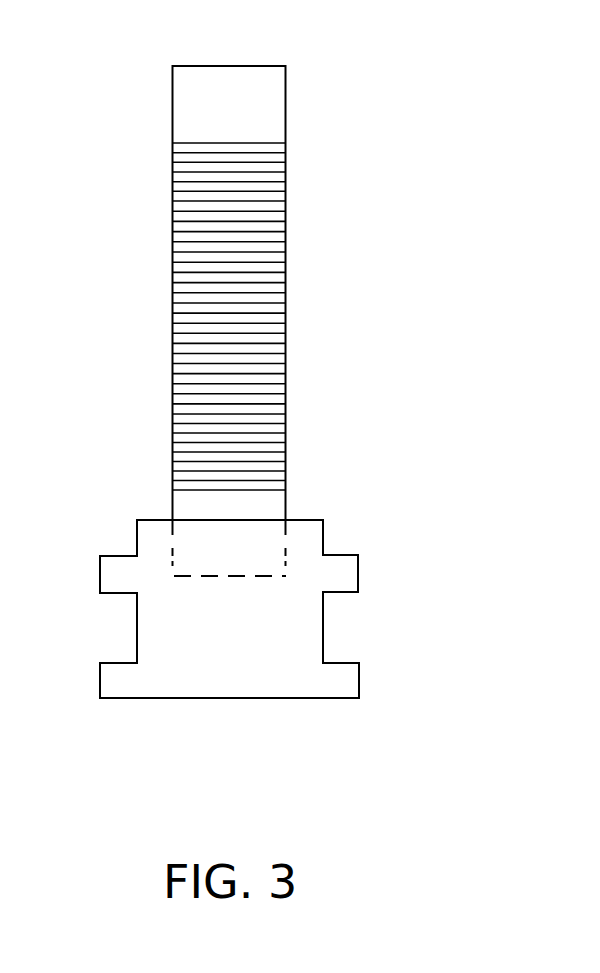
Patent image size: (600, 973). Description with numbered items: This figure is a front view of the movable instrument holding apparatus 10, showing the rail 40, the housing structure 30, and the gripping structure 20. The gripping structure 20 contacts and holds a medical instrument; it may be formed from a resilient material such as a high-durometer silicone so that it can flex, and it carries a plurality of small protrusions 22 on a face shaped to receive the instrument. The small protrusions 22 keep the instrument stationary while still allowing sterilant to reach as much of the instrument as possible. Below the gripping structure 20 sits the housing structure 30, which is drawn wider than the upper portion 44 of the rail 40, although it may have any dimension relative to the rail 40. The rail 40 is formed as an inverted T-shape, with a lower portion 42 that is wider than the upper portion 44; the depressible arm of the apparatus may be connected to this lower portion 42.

The movable instrument holding apparatus 10 is at (365, 36).
The gripping structure 20 is at (202, 105).
The small protrusions 22 is at (247, 218).
The housing structure 30 is at (341, 576).
The rail 40 is at (438, 592).
The lower portion 42 is at (359, 687).
The upper portion 44 is at (323, 628).